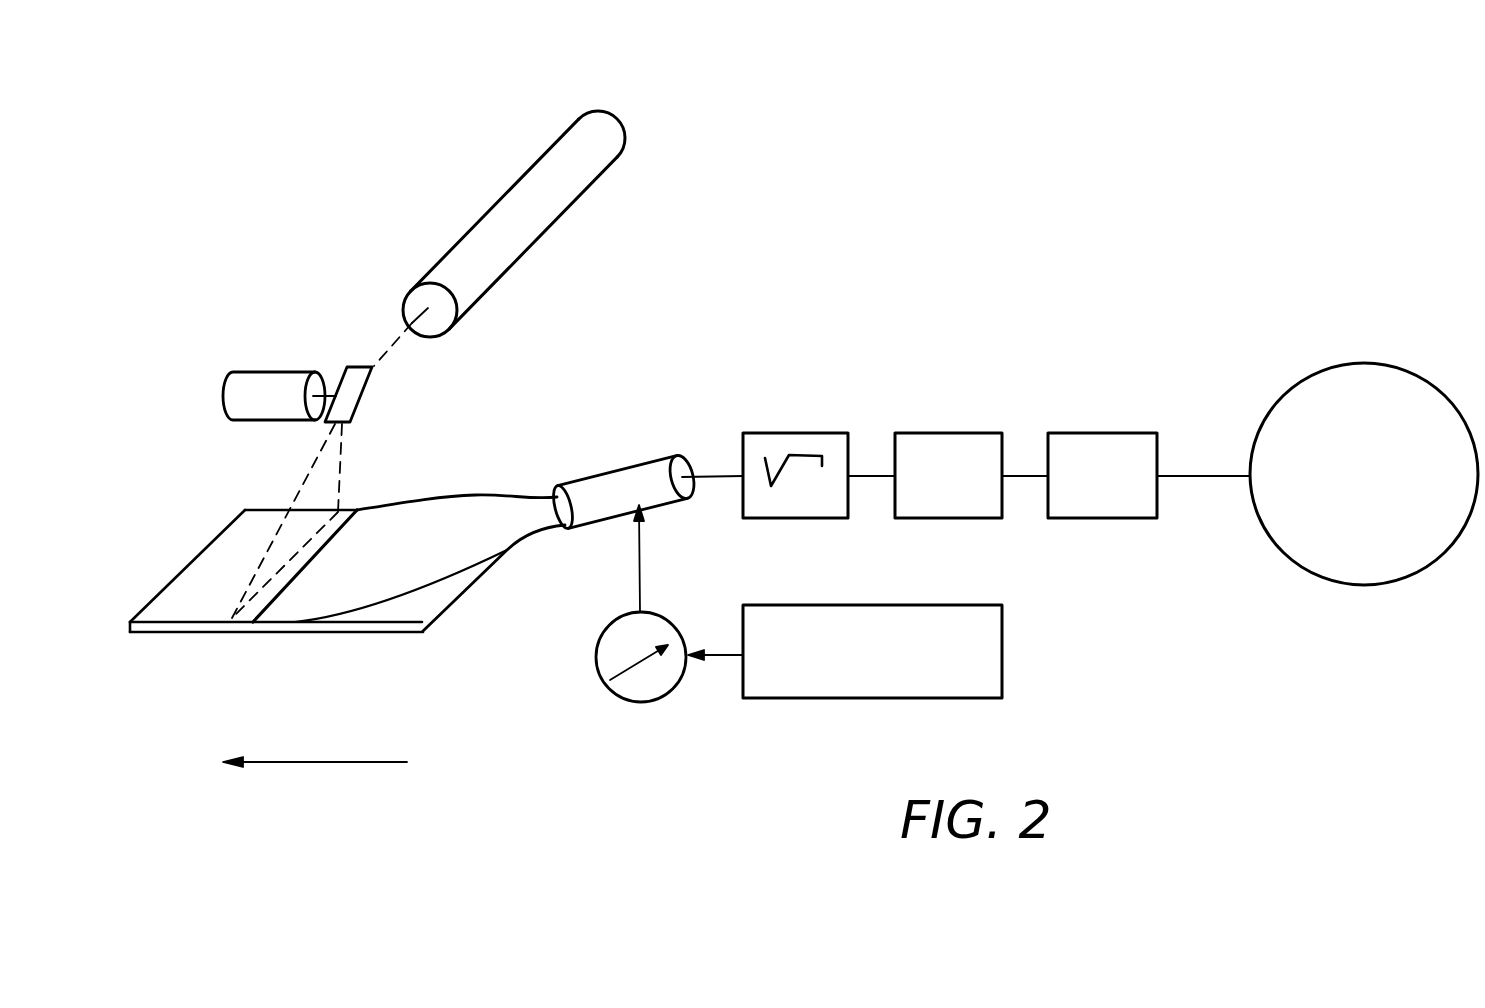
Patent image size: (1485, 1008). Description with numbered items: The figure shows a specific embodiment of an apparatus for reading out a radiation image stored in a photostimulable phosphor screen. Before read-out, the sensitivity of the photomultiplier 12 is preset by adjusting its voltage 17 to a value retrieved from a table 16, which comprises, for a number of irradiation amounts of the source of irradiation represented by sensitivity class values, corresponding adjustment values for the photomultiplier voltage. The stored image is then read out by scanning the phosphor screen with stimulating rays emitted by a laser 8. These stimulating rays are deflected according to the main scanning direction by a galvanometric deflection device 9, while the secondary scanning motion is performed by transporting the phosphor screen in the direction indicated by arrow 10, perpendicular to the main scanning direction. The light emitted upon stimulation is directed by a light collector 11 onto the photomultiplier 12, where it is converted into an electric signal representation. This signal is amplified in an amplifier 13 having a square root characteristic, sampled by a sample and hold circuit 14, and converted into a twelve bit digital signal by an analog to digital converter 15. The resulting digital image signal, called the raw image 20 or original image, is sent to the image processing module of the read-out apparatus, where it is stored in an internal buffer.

The laser 8 is at (521, 177).
The galvanometric deflection device 9 is at (350, 366).
The arrow 10 is at (237, 640).
The light collector 11 is at (410, 502).
The photomultiplier 12 is at (613, 470).
The amplifier 13 is at (777, 432).
The sample and hold circuit 14 is at (927, 432).
The analog to digital converter 15 is at (1081, 432).
The table 16 is at (917, 700).
The photomultiplier voltage 17 is at (623, 702).
The raw image 20 is at (1257, 432).